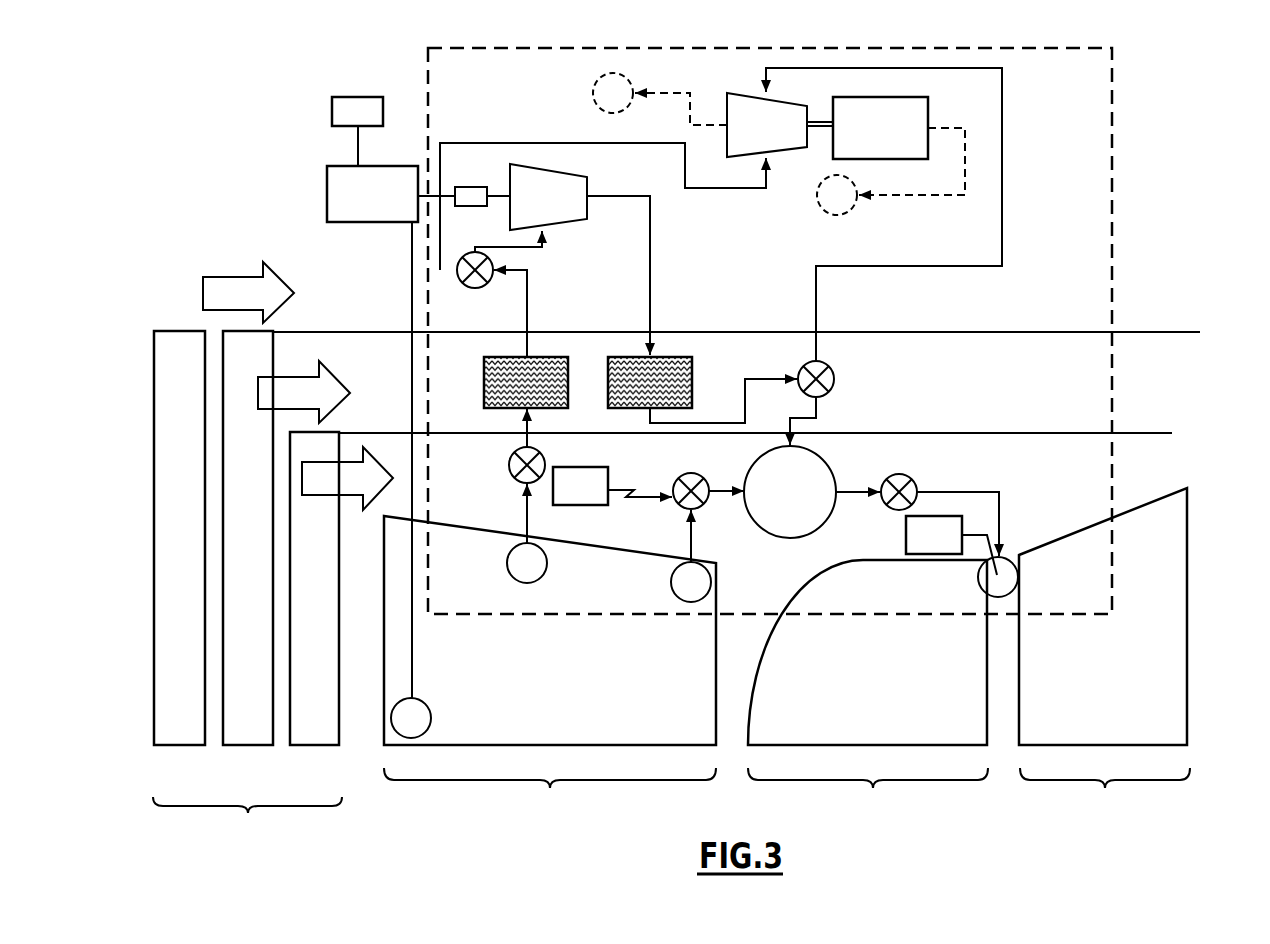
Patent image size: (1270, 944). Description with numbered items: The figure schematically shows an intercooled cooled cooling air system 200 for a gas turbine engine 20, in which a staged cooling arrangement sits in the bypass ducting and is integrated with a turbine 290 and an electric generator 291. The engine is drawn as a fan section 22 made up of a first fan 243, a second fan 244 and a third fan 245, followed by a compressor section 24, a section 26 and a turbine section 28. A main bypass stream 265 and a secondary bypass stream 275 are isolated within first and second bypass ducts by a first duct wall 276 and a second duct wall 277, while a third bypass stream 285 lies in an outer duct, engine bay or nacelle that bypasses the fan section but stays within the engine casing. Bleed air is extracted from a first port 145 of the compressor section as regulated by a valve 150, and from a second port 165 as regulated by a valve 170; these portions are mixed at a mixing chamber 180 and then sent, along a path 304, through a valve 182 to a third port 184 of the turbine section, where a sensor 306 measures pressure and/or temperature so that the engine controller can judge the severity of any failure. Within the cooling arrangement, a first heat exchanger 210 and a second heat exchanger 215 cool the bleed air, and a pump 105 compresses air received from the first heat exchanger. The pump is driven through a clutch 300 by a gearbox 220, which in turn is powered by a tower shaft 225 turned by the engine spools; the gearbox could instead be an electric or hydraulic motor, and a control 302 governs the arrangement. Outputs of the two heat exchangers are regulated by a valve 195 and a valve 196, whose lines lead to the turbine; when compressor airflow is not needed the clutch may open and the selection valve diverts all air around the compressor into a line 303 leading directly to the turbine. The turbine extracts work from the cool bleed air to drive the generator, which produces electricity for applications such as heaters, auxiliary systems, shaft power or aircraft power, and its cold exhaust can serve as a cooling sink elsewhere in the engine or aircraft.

The gas turbine engine 20 is at (1172, 274).
The fan section 22 is at (247, 821).
The compressor section 24 is at (550, 670).
The combustor section 26 is at (868, 692).
The turbine section 28 is at (1104, 656).
The pump 105 is at (588, 183).
The first port 145 is at (508, 558).
The valve 150 is at (510, 474).
The second port 165 is at (674, 578).
The valve 170 is at (681, 478).
The mixing chamber 180 is at (811, 504).
The valve 182 is at (907, 476).
The port 184 is at (1010, 558).
The valve 195 is at (495, 262).
The valve 196 is at (835, 380).
The intercooled cooled cooling air system 200 is at (1089, 96).
The first heat exchanger 210 is at (506, 357).
The second heat exchanger 215 is at (693, 380).
The gearbox 220 is at (393, 207).
The tower shaft 225 is at (426, 704).
The first fan 243 is at (192, 746).
The second fan 244 is at (260, 746).
The third fan 245 is at (326, 746).
The main bypass stream 265 is at (353, 492).
The secondary bypass stream 275 is at (309, 407).
The first duct wall 276 is at (962, 433).
The second duct wall 277 is at (972, 332).
The third bypass stream 285 is at (254, 307).
The turbine 290 is at (788, 139).
The electric generator 291 is at (901, 139).
The clutch 300 is at (466, 187).
The control 302 is at (352, 103).
The line 303 is at (712, 188).
The flow path 304 is at (600, 498).
The sensor 306 is at (954, 547).